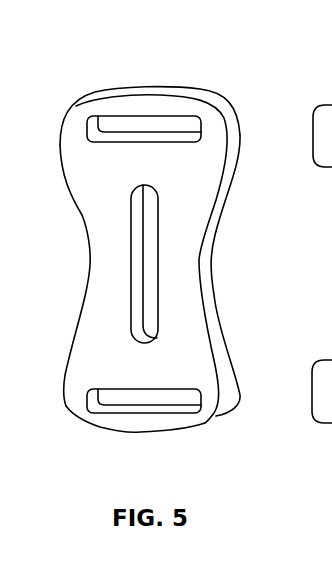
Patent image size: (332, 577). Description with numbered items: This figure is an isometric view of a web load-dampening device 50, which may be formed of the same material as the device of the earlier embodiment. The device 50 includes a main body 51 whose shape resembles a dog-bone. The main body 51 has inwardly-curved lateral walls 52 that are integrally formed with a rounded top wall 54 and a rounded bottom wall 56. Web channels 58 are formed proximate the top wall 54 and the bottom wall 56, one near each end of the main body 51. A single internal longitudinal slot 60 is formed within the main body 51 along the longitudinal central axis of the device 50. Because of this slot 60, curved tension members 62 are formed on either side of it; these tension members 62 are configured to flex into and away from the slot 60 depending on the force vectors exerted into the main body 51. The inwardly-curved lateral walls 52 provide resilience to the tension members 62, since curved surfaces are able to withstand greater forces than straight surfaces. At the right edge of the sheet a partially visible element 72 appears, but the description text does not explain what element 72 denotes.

The web load-dampening device 50 is at (149, 254).
The main body 51 is at (208, 163).
The inwardly-curved lateral walls 52 is at (88, 260).
The top wall 54 is at (143, 90).
The bottom wall 56 is at (100, 433).
The web channels 58 is at (125, 128).
The internal longitudinal slot 60 is at (143, 225).
The curved tension members 62 is at (112, 232).
The adjacent component (partial) 72 is at (319, 264).